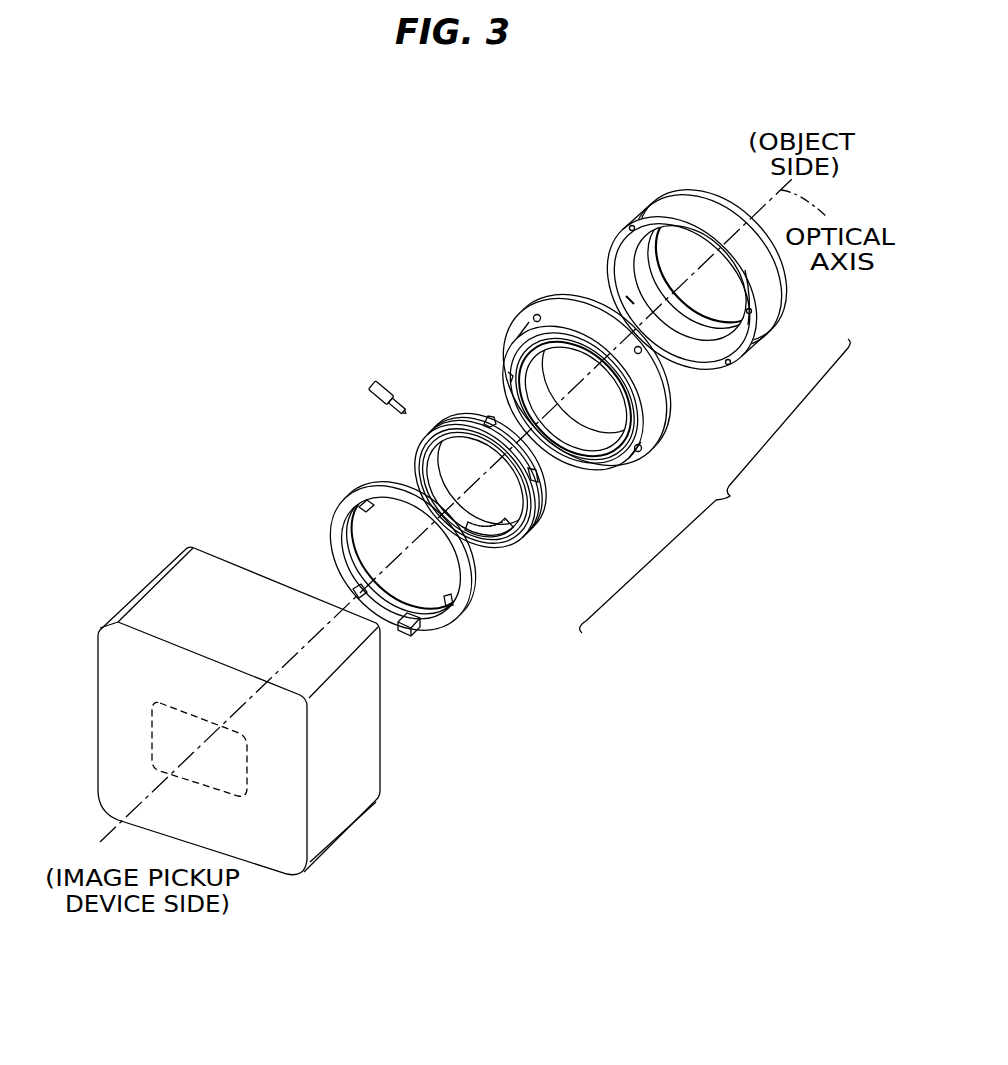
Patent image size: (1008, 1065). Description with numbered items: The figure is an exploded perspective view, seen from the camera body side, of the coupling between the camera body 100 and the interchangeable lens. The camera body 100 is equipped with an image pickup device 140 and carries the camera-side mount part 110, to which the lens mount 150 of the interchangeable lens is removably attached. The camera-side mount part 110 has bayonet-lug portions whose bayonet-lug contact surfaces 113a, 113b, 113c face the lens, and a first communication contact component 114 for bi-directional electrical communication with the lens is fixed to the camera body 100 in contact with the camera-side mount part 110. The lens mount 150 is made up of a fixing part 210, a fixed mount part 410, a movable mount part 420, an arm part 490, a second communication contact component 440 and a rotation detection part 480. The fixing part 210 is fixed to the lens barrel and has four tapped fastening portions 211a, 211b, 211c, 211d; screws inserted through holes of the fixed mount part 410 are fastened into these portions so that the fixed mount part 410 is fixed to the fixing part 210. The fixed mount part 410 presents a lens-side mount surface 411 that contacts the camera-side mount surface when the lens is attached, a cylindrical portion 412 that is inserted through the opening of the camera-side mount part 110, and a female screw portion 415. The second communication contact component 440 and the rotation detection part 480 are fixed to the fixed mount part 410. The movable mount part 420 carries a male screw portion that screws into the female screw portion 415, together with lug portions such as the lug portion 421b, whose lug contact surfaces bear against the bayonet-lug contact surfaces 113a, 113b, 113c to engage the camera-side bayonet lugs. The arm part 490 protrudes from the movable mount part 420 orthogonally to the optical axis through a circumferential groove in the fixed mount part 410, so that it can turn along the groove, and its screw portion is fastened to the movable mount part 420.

The camera body 100 is at (372, 712).
The camera-side mount part 110 is at (394, 561).
The bayonet-lug contact surface 113a is at (364, 505).
The bayonet-lug contact surface 113b is at (352, 586).
The bayonet-lug contact surface 113c is at (453, 599).
The first communication contact component 114 is at (392, 636).
The image pickup device 140 is at (247, 758).
The lens mount 150 is at (715, 486).
The fixing part 210 is at (677, 293).
The fastening portion 211a is at (627, 228).
The fastening portion 211b is at (630, 300).
The fastening portion 211c is at (728, 364).
The fastening portion 211d is at (749, 313).
The fixed mount part 410 is at (572, 381).
The lens-side mount surface 411 is at (512, 362).
The cylindrical portion 412 is at (558, 330).
The female screw portion 415 is at (598, 455).
The movable mount part 420 is at (495, 472).
The lug portion 421b is at (493, 550).
The second communication contact component 440 is at (512, 533).
The rotation detection part 480 is at (488, 420).
The arm part 490 is at (374, 386).